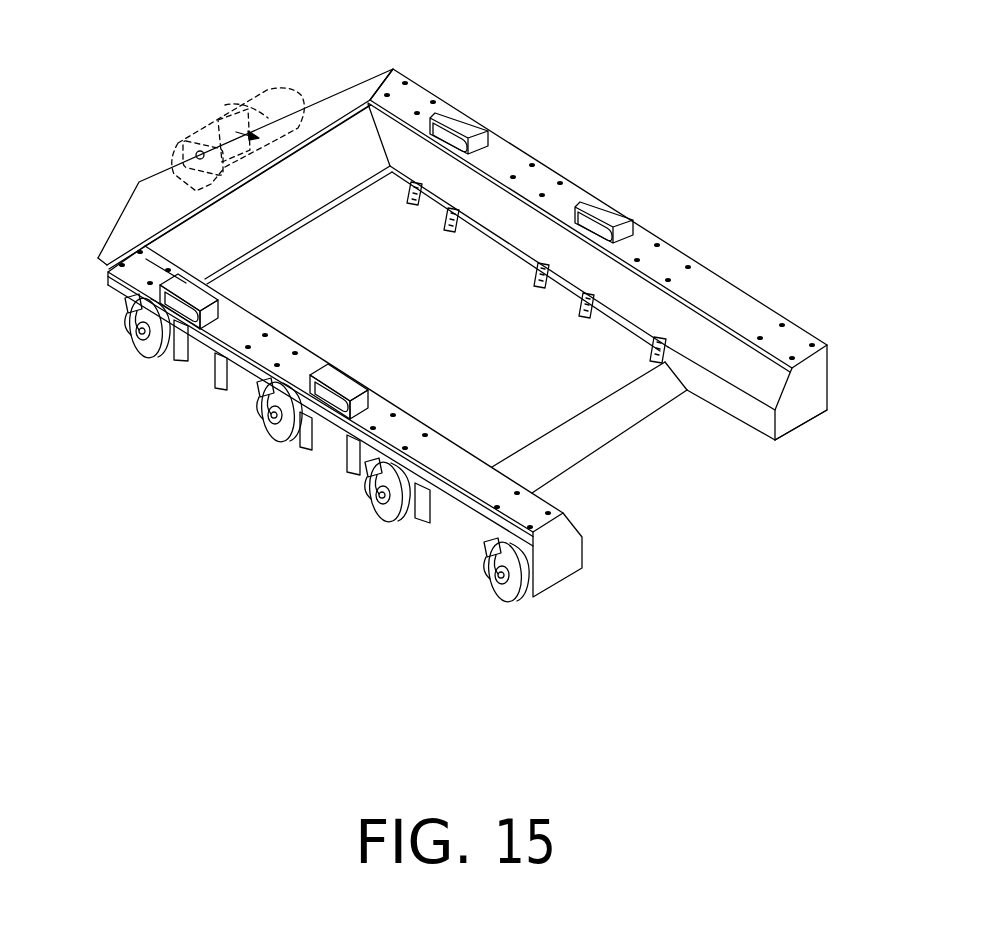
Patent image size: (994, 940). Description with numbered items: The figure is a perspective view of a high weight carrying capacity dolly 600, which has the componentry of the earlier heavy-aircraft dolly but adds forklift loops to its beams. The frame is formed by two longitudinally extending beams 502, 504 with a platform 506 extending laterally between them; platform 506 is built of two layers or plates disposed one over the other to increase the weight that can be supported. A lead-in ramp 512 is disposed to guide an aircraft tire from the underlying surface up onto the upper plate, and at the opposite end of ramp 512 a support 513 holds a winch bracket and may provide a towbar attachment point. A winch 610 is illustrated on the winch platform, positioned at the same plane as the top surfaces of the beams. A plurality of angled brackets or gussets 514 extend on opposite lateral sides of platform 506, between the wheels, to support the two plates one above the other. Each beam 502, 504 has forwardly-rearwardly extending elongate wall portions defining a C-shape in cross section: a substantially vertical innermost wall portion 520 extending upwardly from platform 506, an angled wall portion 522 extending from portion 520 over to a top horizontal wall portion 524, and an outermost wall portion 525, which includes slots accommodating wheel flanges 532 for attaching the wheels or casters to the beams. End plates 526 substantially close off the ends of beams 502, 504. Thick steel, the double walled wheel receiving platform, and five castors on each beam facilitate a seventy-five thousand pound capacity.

The beam 502 is at (135, 272).
The beam 504 is at (636, 275).
The platform 506 is at (500, 376).
The lead-in ramp 512 is at (562, 453).
The support 513 is at (327, 84).
The angled bracket 514 is at (212, 383).
The innermost wall portion 520 is at (742, 410).
The angled wall portion 522 is at (773, 377).
The top horizontal wall portion 524 is at (737, 312).
The outermost wall portion 525 is at (350, 430).
The end plate 526 is at (803, 410).
The wheel flange 532 is at (503, 553).
The high weight carrying capacity dolly 600 is at (650, 177).
The winch 610 is at (254, 92).